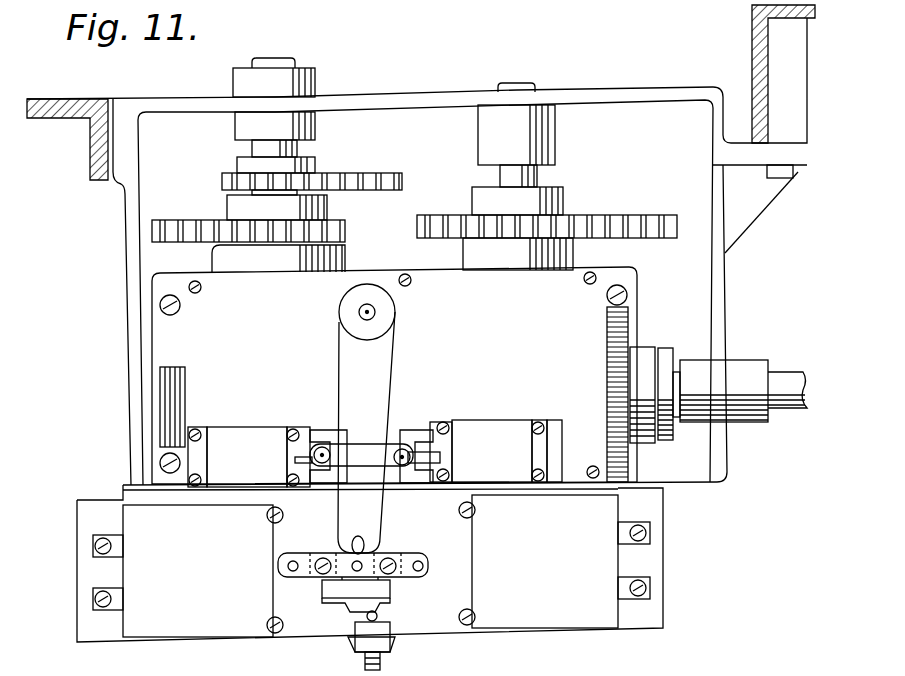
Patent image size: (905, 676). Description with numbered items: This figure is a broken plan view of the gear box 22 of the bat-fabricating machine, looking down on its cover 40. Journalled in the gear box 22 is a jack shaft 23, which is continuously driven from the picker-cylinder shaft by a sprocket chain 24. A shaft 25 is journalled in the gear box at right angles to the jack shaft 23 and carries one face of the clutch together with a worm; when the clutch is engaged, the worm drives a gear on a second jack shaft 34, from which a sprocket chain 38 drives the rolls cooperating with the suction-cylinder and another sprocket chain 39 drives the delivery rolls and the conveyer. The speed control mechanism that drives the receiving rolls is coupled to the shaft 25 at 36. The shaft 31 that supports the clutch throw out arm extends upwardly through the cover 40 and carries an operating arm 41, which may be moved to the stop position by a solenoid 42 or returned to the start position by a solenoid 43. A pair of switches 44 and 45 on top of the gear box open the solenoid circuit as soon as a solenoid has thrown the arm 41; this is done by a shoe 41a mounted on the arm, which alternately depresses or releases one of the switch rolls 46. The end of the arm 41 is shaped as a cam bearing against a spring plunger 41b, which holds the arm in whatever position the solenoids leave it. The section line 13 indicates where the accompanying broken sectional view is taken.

The section line 13 is at (667, 486).
The gear box 22 is at (205, 322).
The jack shaft 23 is at (562, 223).
The sprocket chain 24 is at (603, 213).
The shaft 25 is at (680, 377).
The shaft 31 is at (368, 312).
The jack shaft 34 is at (298, 148).
The coupling 36 is at (735, 370).
The sprocket chain 38 is at (372, 168).
The sprocket chain 39 is at (195, 220).
The cover 40 is at (573, 275).
The operating arm 41 is at (380, 360).
The shoe 41a is at (357, 453).
The spring plunger 41b is at (377, 617).
The solenoid 42 is at (187, 613).
The solenoid 43 is at (543, 613).
The switch 44 is at (238, 442).
The switch 45 is at (495, 428).
The switch rolls 46 is at (305, 453).